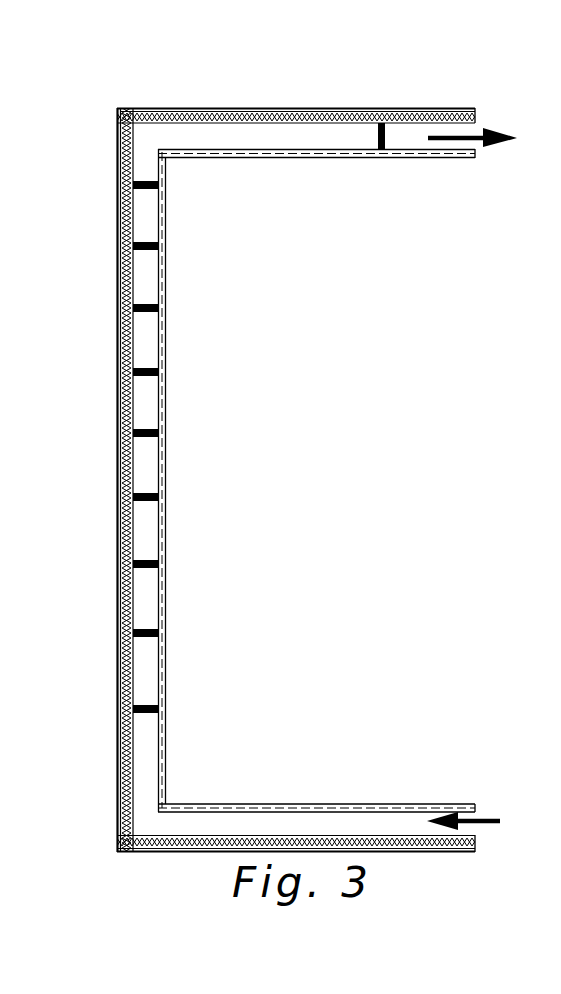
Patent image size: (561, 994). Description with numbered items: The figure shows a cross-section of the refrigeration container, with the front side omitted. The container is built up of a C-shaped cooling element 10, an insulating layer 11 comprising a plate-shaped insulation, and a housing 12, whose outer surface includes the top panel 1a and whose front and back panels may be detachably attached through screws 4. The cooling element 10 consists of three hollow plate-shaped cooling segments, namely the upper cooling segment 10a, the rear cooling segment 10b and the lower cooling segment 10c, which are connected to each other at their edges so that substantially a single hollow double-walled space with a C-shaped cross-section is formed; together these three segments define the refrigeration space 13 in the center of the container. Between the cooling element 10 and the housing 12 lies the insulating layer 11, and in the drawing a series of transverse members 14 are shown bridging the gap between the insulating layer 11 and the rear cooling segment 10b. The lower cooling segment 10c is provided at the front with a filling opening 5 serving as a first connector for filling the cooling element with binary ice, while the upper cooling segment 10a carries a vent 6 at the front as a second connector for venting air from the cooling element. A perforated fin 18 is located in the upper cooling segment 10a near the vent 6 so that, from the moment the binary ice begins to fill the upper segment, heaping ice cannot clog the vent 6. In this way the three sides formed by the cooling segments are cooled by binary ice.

The top panel 1a is at (422, 108).
The screws 4 is at (261, 454).
The filling opening 5 is at (482, 808).
The vent 6 is at (485, 130).
The C-shaped cooling element 10 is at (312, 439).
The upper cooling segment 10a is at (292, 138).
The rear cooling segment 10b is at (150, 393).
The lower cooling segment 10c is at (293, 822).
The insulating layer 11 is at (267, 115).
The housing 12 is at (120, 435).
The refrigeration space 13 is at (335, 485).
The spacer ribs 14 is at (140, 370).
The perforated fin 18 is at (387, 148).